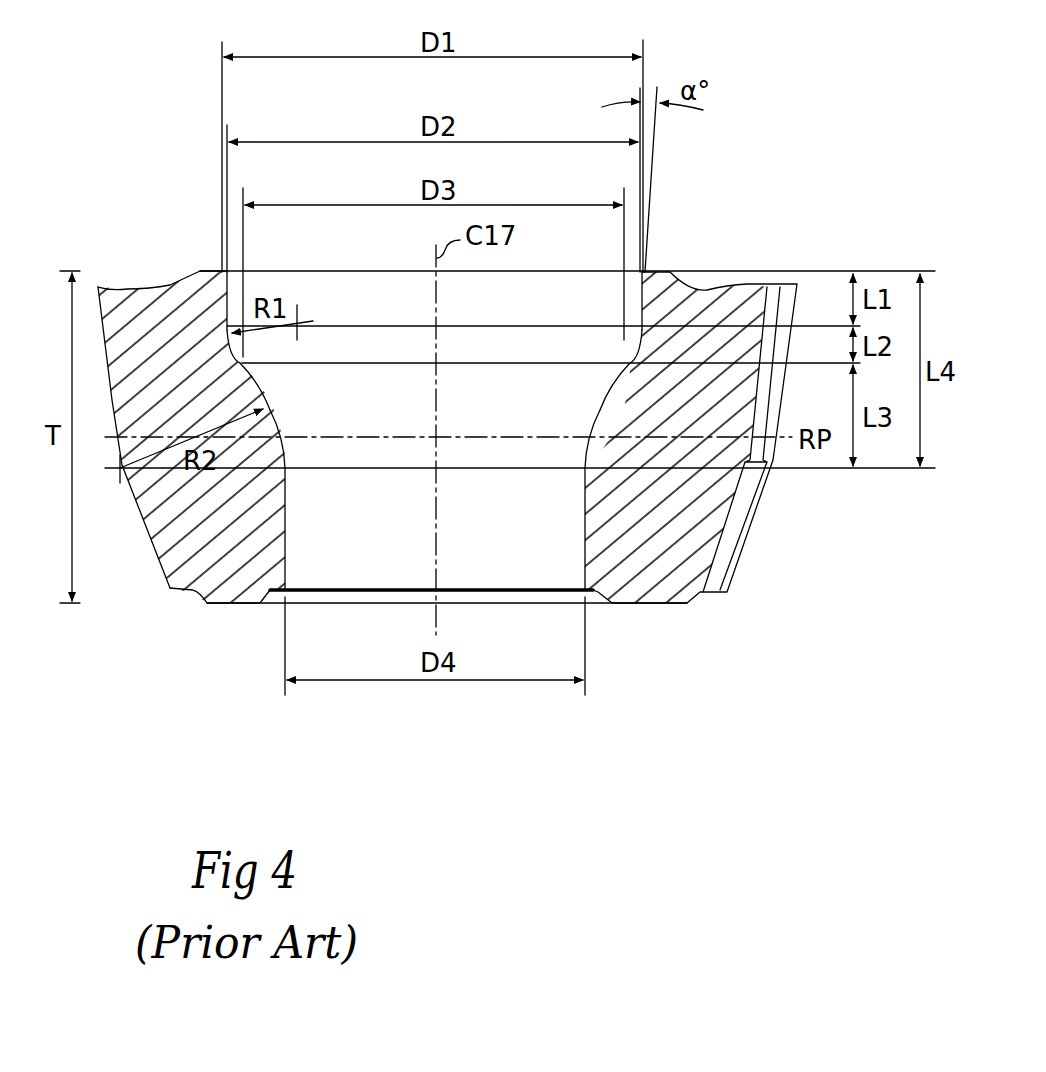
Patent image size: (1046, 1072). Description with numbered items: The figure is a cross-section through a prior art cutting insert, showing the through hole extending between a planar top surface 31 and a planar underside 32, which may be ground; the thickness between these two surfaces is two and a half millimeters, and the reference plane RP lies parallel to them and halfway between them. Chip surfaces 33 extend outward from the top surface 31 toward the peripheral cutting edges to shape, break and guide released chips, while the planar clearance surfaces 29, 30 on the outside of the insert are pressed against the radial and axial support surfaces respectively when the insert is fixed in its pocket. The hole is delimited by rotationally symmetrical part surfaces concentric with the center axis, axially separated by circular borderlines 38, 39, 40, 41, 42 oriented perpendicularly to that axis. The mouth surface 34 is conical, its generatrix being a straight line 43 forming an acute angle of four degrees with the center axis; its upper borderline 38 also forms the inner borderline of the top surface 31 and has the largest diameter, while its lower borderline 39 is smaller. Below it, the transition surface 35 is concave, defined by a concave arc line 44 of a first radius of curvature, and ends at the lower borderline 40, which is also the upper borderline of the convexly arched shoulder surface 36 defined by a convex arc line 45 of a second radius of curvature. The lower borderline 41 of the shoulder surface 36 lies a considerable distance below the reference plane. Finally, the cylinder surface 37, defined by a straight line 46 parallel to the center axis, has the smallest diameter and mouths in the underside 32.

The clearance surface 29 is at (783, 407).
The clearance surface 30 is at (101, 315).
The top surface 31 is at (215, 268).
The underside 32 is at (233, 604).
The chip surface 33 is at (153, 288).
The mouth surface 34 is at (543, 304).
The transition surface 35 is at (551, 349).
The shoulder surface 36 is at (448, 418).
The cylinder surface 37 is at (520, 506).
The upper borderline 38 is at (337, 275).
The lower borderline 39 is at (337, 328).
The lower borderline 40 is at (337, 366).
The lower borderline 41 is at (337, 470).
The circular borderline 42 is at (340, 589).
The straight line 43 is at (642, 292).
The concave arc line 44 is at (633, 357).
The convex arc line 45 is at (603, 393).
The straight line 46 is at (585, 536).